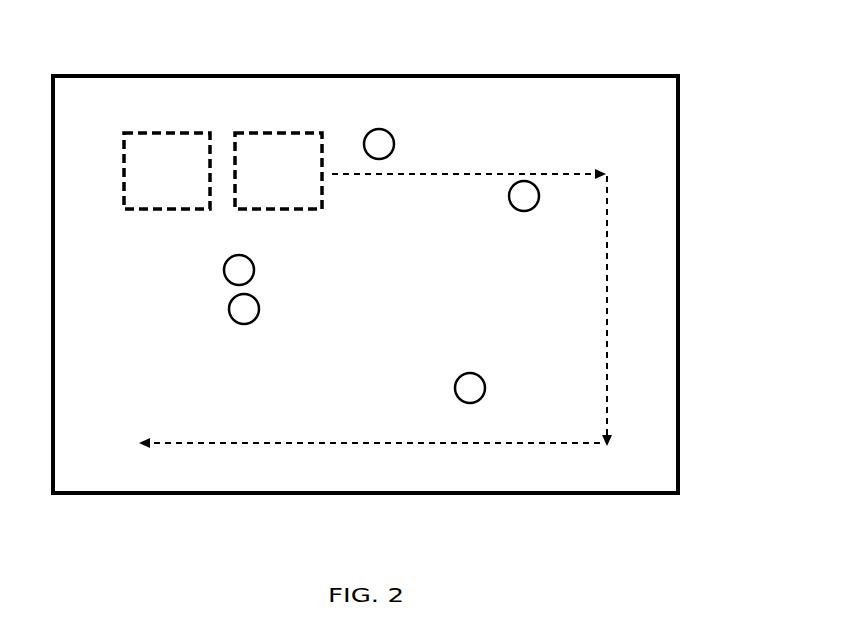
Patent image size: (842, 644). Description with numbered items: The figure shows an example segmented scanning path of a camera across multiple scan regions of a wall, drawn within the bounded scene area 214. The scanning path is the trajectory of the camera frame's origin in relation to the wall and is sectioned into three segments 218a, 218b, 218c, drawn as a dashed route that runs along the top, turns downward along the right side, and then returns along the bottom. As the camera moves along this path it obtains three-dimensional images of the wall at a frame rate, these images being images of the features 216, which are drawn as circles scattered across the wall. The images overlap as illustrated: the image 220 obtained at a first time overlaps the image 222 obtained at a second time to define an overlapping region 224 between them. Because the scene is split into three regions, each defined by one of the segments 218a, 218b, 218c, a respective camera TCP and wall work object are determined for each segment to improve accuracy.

The display screen / platform area 214 is at (657, 110).
The features 216 is at (382, 130).
The segment 218a is at (467, 173).
The segment 218b is at (607, 287).
The segment 218c is at (532, 443).
The image 220 is at (155, 137).
The image 222 is at (276, 134).
The overlapping region 224 is at (224, 141).